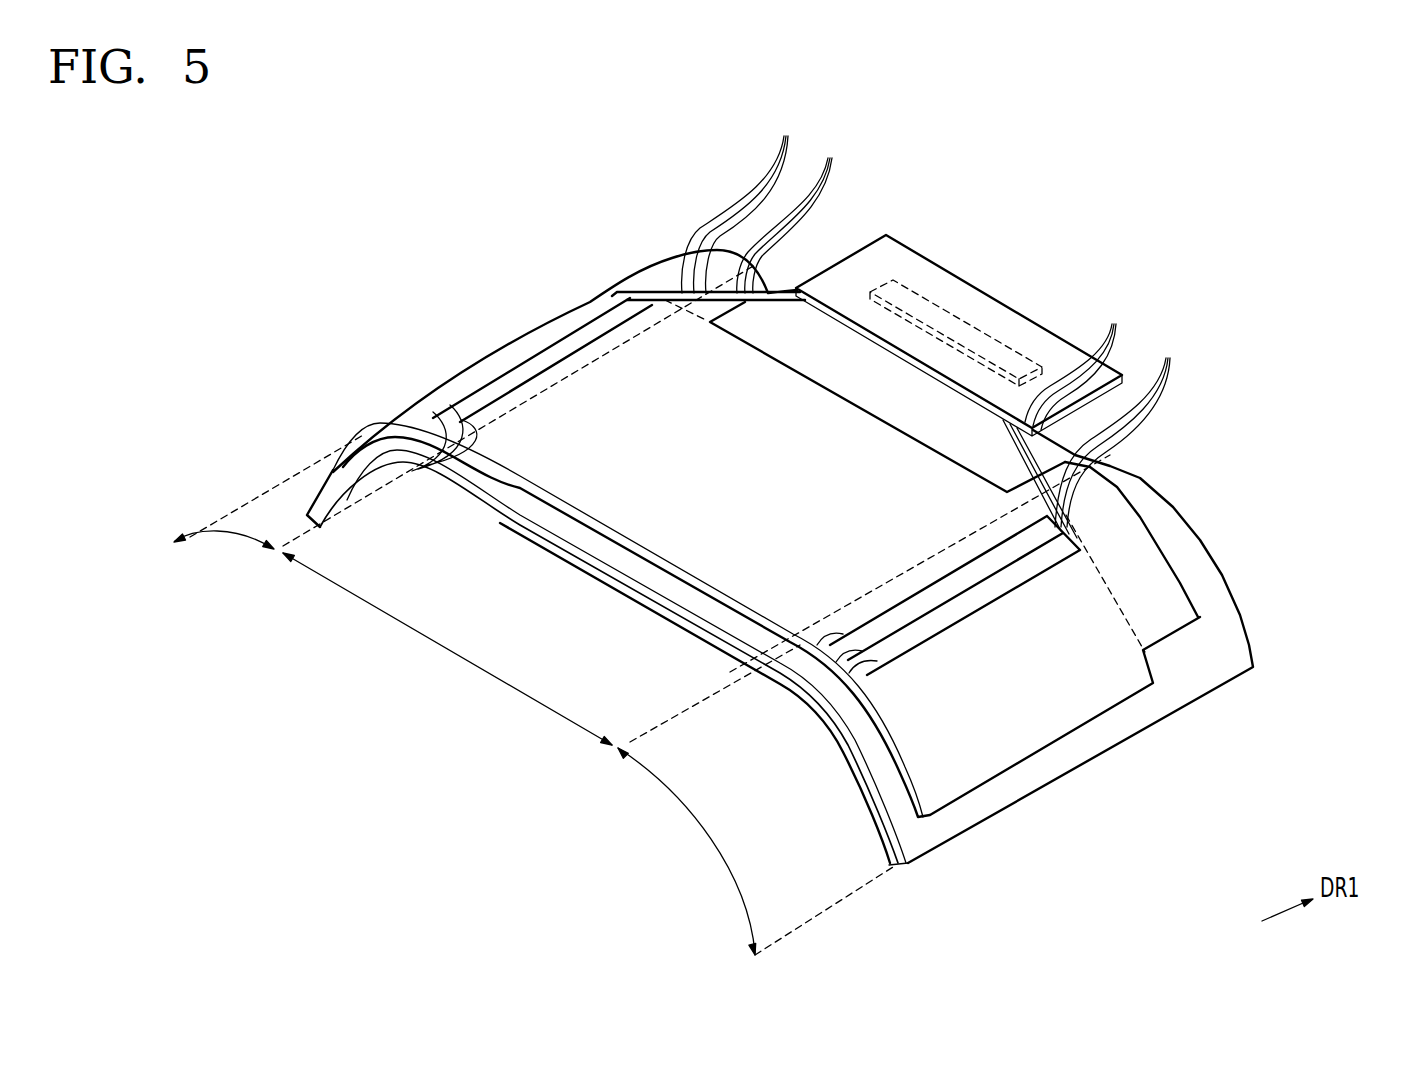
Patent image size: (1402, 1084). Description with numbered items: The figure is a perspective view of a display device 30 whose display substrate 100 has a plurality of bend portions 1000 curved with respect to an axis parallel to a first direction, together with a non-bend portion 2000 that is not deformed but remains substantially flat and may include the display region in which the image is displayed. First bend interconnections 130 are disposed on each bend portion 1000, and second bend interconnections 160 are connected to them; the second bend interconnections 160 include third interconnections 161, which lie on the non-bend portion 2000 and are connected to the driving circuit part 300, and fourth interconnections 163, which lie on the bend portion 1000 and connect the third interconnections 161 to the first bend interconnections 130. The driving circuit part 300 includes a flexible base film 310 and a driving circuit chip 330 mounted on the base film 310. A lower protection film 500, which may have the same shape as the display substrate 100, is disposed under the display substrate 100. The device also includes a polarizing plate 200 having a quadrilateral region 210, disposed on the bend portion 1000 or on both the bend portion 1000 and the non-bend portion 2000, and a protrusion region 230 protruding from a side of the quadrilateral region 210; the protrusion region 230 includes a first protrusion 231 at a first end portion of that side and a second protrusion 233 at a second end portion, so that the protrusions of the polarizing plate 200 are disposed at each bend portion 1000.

The display device 30 is at (1228, 233).
The display substrate 100 is at (967, 812).
The first bend interconnections 130 is at (423, 466).
The second bend interconnections 160 is at (857, 144).
The third interconnections 161 is at (933, 333).
The fourth interconnections 163 is at (933, 314).
The polarizing plate 200 is at (1304, 784).
The quadrilateral region 210 is at (1032, 717).
The protrusion region 230 is at (1192, 793).
The first protrusion 231 is at (710, 308).
The second protrusion 233 is at (1147, 603).
The driving circuit part 300 is at (1052, 252).
The base film 310 is at (943, 282).
The driving circuit chip 330 is at (982, 340).
The lower protection film 500 is at (866, 795).
The bend portion 1000 is at (465, 743).
The non-bend portion 2000 is at (447, 649).